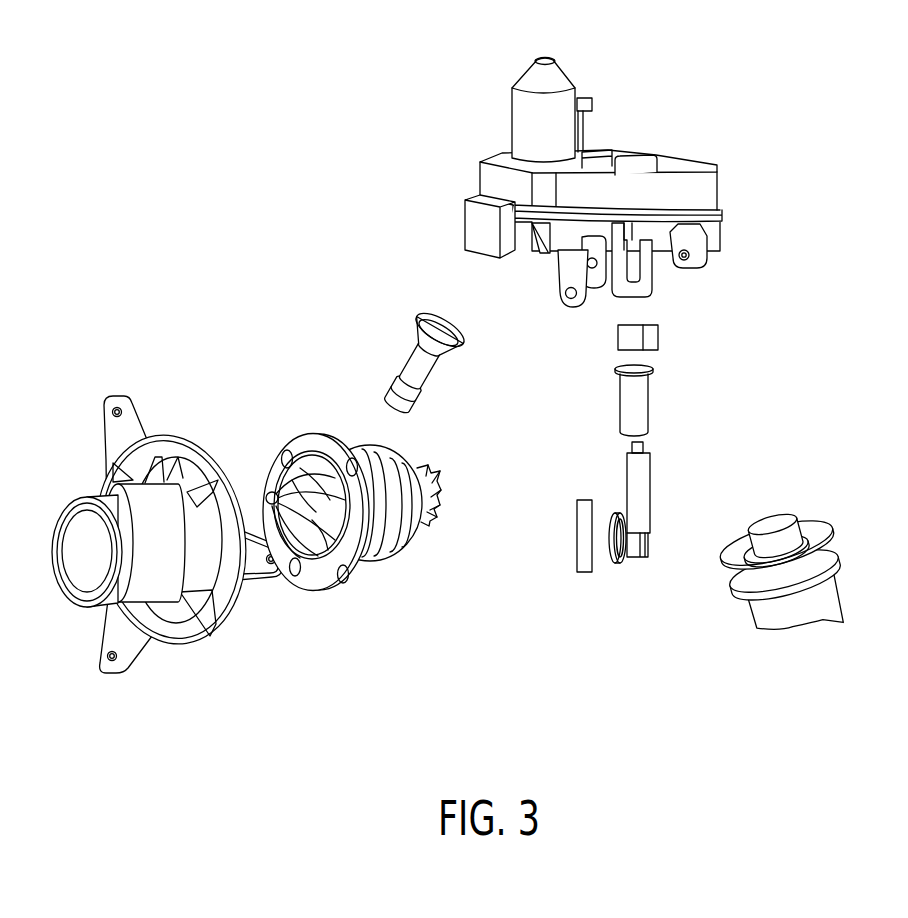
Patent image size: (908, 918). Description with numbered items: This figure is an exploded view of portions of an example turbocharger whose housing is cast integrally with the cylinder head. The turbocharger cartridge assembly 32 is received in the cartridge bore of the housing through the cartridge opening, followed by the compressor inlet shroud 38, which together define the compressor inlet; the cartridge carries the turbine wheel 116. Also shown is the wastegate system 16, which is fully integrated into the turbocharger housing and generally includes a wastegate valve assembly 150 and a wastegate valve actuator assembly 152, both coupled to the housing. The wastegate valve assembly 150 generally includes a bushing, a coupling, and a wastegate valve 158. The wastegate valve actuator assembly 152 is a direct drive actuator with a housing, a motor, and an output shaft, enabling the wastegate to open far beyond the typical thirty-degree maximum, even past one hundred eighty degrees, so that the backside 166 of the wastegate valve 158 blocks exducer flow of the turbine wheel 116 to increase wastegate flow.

The wastegate system 16 is at (818, 120).
The turbocharger cartridge assembly 32 is at (414, 590).
The compressor inlet shroud 38 is at (214, 674).
The turbine wheel 116 is at (428, 473).
The wastegate valve assembly 150 is at (788, 449).
The wastegate valve actuator assembly 152 is at (664, 116).
The wastegate valve 158 is at (621, 565).
The backside 166 is at (652, 533).